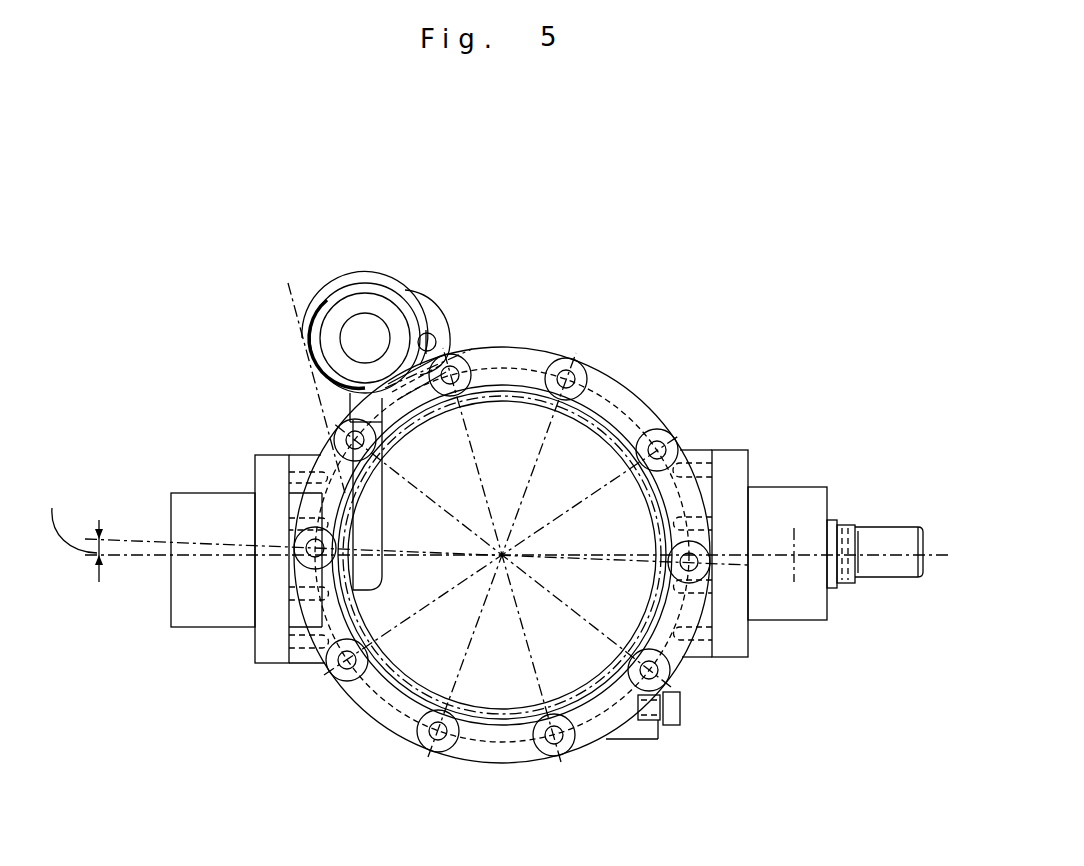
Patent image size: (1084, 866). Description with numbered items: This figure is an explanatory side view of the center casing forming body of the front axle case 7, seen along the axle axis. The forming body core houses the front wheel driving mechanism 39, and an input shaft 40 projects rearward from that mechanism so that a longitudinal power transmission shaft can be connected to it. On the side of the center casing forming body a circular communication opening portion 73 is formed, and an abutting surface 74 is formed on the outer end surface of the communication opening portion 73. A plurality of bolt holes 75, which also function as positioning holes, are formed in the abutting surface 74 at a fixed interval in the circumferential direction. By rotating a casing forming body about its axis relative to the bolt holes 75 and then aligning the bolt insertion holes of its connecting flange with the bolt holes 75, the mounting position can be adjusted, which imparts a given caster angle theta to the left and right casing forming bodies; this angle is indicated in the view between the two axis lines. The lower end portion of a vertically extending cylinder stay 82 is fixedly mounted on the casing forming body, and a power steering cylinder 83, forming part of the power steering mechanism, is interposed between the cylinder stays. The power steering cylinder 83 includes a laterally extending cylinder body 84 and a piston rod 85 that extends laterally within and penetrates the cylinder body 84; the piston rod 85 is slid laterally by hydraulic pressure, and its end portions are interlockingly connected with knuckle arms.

The front axle case 7 is at (572, 277).
The front wheel driving mechanism 39 is at (722, 448).
The input shaft 40 is at (890, 537).
The communication opening portion 73 is at (570, 450).
The abutting surface 74 is at (497, 352).
The bolt hole 75 is at (574, 376).
The cylinder stay 82 is at (385, 592).
The power steering cylinder 83 is at (335, 266).
The cylinder body 84 is at (288, 283).
The piston rod 85 is at (372, 312).